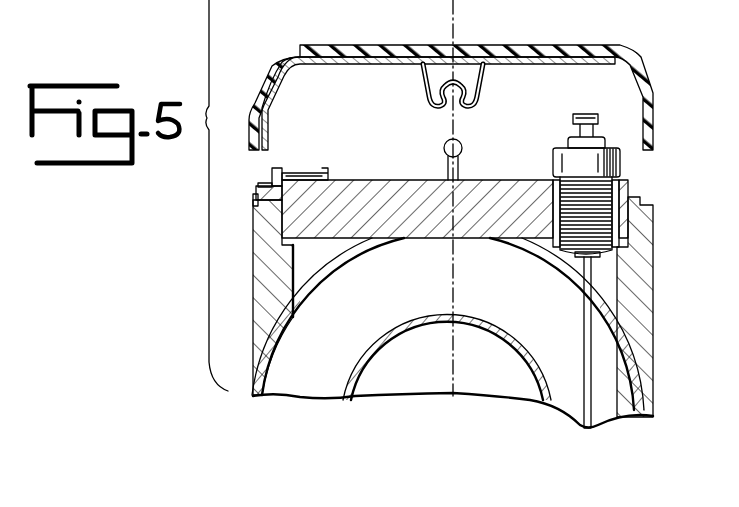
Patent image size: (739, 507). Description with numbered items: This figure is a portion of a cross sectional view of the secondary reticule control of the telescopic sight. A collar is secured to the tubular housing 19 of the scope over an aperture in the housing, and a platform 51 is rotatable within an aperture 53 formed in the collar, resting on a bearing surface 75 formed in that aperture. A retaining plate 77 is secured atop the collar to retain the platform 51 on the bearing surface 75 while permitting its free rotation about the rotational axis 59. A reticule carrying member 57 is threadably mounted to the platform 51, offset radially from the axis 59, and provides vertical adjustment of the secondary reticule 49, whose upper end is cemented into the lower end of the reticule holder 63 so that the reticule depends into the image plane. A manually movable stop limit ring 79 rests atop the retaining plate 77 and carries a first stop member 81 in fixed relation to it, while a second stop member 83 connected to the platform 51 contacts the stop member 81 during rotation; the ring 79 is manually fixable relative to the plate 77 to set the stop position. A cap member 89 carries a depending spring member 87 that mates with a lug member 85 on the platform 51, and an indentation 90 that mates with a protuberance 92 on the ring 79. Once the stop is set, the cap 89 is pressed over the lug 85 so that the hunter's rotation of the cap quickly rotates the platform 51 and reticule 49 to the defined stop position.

The tubular housing 19 is at (283, 326).
The secondary reticule 49 is at (580, 287).
The platform 51 is at (374, 178).
The aperture 53 is at (295, 258).
The reticule carrying member 57 is at (622, 171).
The rotational axis 59 is at (454, 284).
The reticule holder 63 is at (575, 122).
The bearing surface 75 is at (262, 226).
The retaining plate 77 is at (258, 203).
The stop limit ring 79 is at (268, 186).
The first stop member 81 is at (271, 171).
The second stop member 83 is at (322, 166).
The lug member 85 is at (464, 145).
The spring member 87 is at (481, 102).
The cap member 89 is at (641, 92).
The indentation 90 is at (266, 137).
The protuberance 92 is at (268, 194).